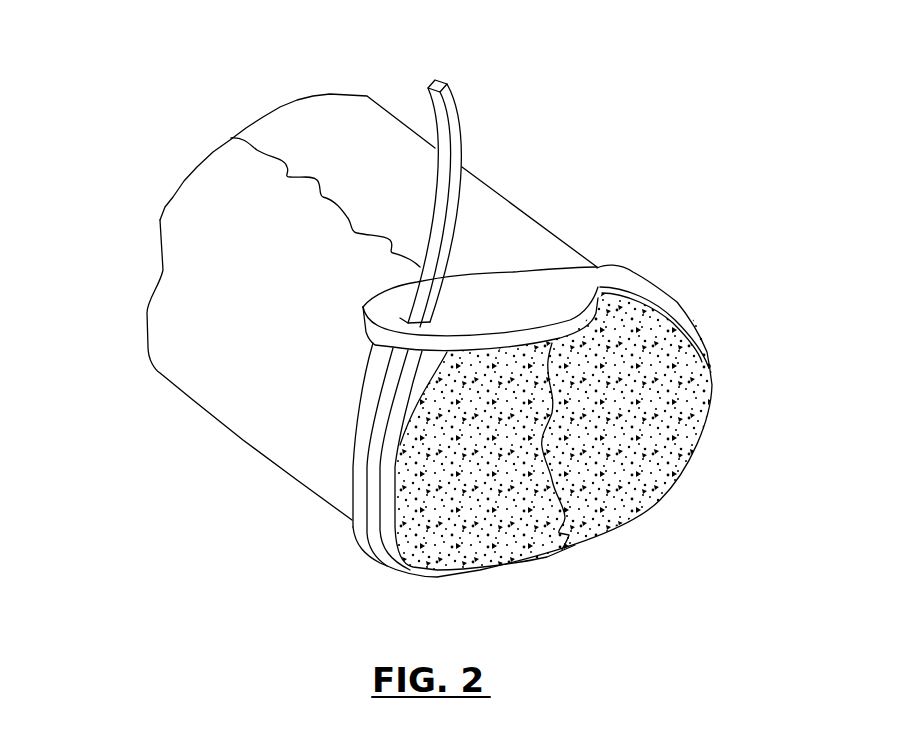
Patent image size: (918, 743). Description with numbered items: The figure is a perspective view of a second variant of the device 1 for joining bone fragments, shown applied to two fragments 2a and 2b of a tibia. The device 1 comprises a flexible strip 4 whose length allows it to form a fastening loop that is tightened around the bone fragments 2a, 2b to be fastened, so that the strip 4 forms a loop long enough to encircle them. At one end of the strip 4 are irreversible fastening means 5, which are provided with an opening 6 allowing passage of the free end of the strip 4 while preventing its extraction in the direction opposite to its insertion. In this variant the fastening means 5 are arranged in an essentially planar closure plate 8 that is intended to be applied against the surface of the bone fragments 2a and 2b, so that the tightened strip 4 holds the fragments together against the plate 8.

The device 1 is at (708, 249).
The bone fragment 2a is at (343, 142).
The bone fragment 2b is at (238, 365).
The flexible strip 4 is at (345, 443).
The fastening means 5 is at (540, 288).
The opening 6 is at (363, 310).
The closure plate 8 is at (492, 306).